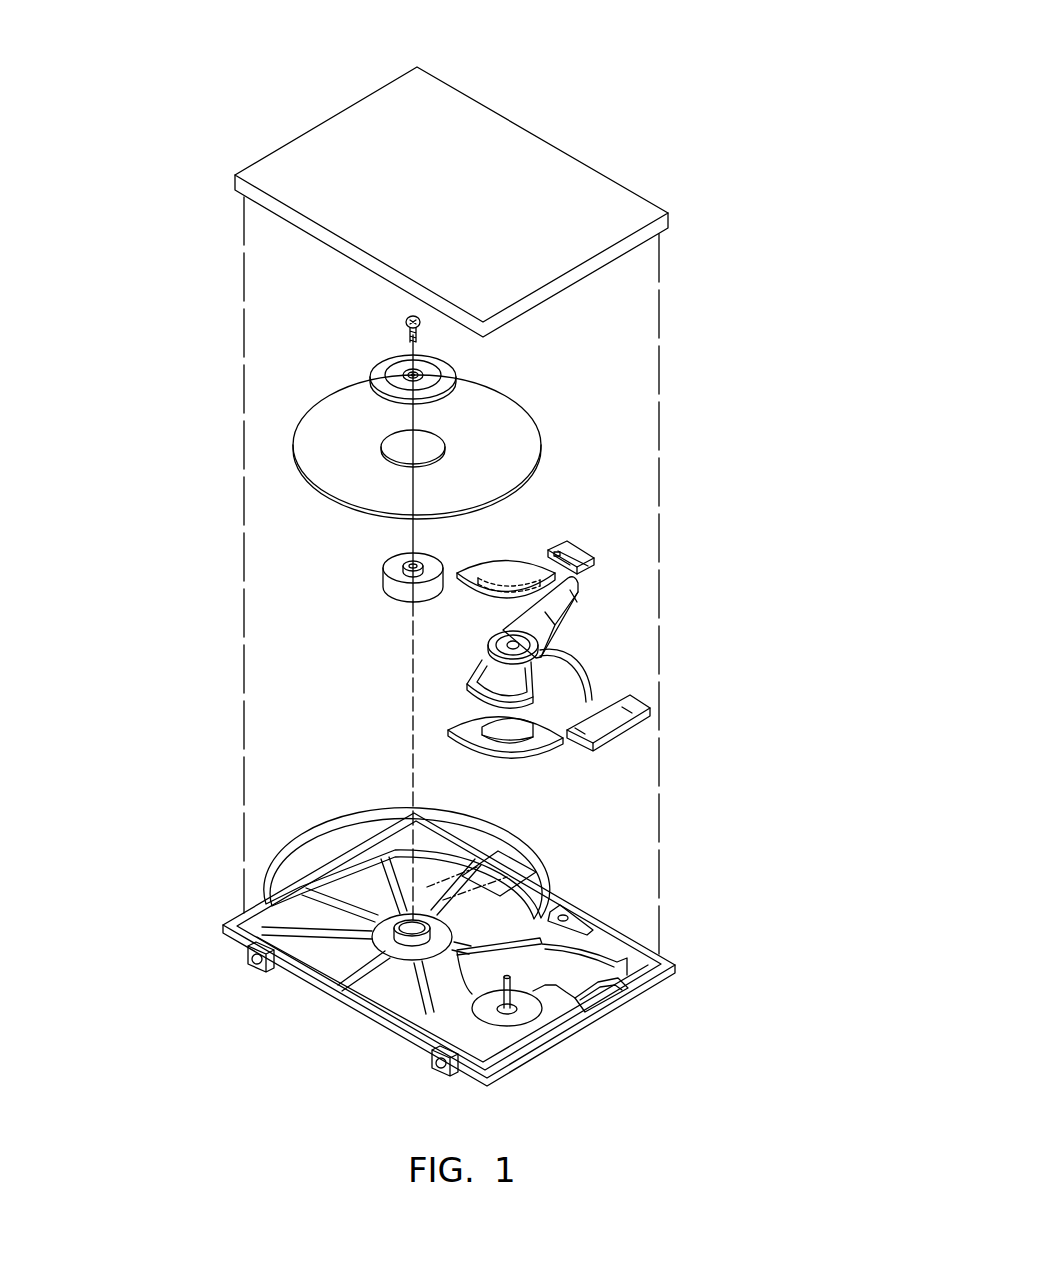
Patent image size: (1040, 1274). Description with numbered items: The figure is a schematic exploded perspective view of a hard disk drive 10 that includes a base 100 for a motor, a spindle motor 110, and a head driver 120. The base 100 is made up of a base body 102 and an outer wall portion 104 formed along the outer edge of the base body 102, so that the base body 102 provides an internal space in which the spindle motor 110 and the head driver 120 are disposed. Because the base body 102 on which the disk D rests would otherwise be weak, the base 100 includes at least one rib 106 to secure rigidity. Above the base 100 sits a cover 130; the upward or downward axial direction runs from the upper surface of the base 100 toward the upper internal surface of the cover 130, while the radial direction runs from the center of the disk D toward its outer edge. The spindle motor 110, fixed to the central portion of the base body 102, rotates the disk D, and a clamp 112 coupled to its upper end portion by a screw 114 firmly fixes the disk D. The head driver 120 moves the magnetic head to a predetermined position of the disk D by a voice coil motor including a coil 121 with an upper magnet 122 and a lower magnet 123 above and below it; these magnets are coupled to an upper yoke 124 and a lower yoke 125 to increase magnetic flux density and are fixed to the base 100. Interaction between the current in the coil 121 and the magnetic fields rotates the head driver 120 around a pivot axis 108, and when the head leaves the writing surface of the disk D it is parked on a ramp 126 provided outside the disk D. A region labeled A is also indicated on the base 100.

The hard disk drive 10 is at (262, 38).
The base 100 is at (378, 952).
The base body 102 is at (410, 947).
The outer wall portion 104 is at (372, 1003).
The rib 106 is at (300, 888).
The pivot axis 108 is at (538, 1013).
The spindle motor 110 is at (378, 580).
The clamp 112 is at (453, 373).
The screw 114 is at (406, 323).
The head driver 120 is at (522, 662).
The coil 121 is at (468, 675).
The upper magnet 122 is at (500, 583).
The lower magnet 123 is at (517, 737).
The upper yoke 124 is at (493, 580).
The lower yoke 125 is at (445, 758).
The ramp 126 is at (577, 545).
The cover 130 is at (628, 168).
The disk D is at (520, 427).
The region A is at (500, 862).